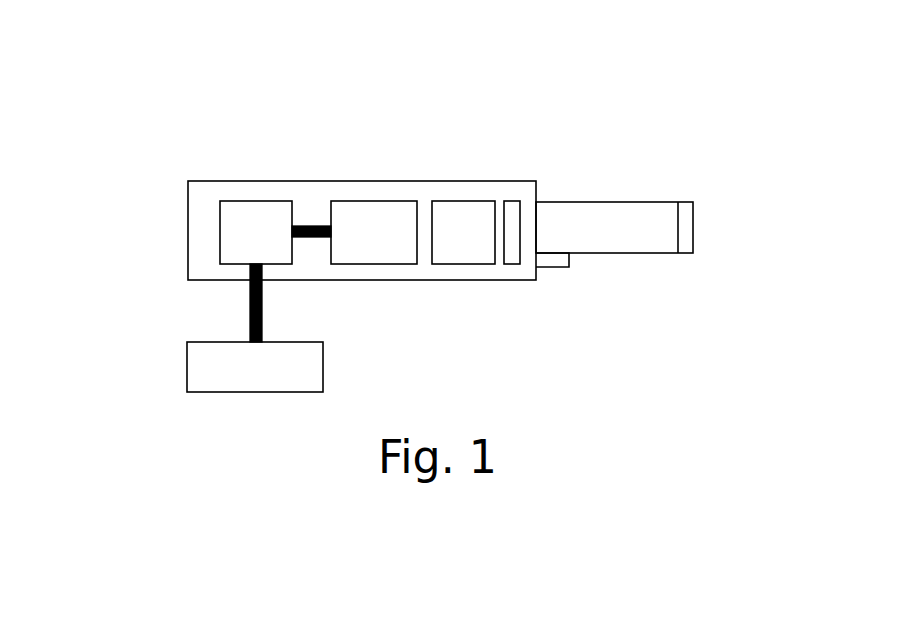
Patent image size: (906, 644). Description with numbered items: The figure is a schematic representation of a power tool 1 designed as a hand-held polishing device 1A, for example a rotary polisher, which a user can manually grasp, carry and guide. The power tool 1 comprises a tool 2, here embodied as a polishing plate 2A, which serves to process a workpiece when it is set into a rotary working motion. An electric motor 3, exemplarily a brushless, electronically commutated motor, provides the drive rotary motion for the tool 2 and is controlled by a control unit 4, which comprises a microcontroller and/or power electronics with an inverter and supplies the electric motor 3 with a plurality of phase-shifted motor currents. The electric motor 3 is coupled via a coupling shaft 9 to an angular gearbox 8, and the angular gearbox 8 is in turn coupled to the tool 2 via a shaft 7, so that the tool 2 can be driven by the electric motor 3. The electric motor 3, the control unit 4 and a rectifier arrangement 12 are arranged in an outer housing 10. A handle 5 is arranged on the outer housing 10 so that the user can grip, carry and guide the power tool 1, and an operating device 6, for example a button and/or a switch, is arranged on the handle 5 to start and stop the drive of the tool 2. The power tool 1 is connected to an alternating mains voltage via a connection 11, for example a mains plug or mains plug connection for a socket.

The power tool 1 is at (412, 214).
The polishing device 1A is at (200, 111).
The tool 2 is at (187, 367).
The polishing plate 2A is at (199, 373).
The electric motor 3 is at (378, 212).
The control unit 4 is at (478, 219).
The handle 5 is at (609, 212).
The operating device 6 is at (561, 263).
The shaft 7 is at (262, 318).
The angular gearbox 8 is at (251, 222).
The coupling shaft 9 is at (313, 226).
The outer housing 10 is at (432, 181).
The connection 11 is at (690, 226).
The rectifier arrangement 12 is at (514, 211).